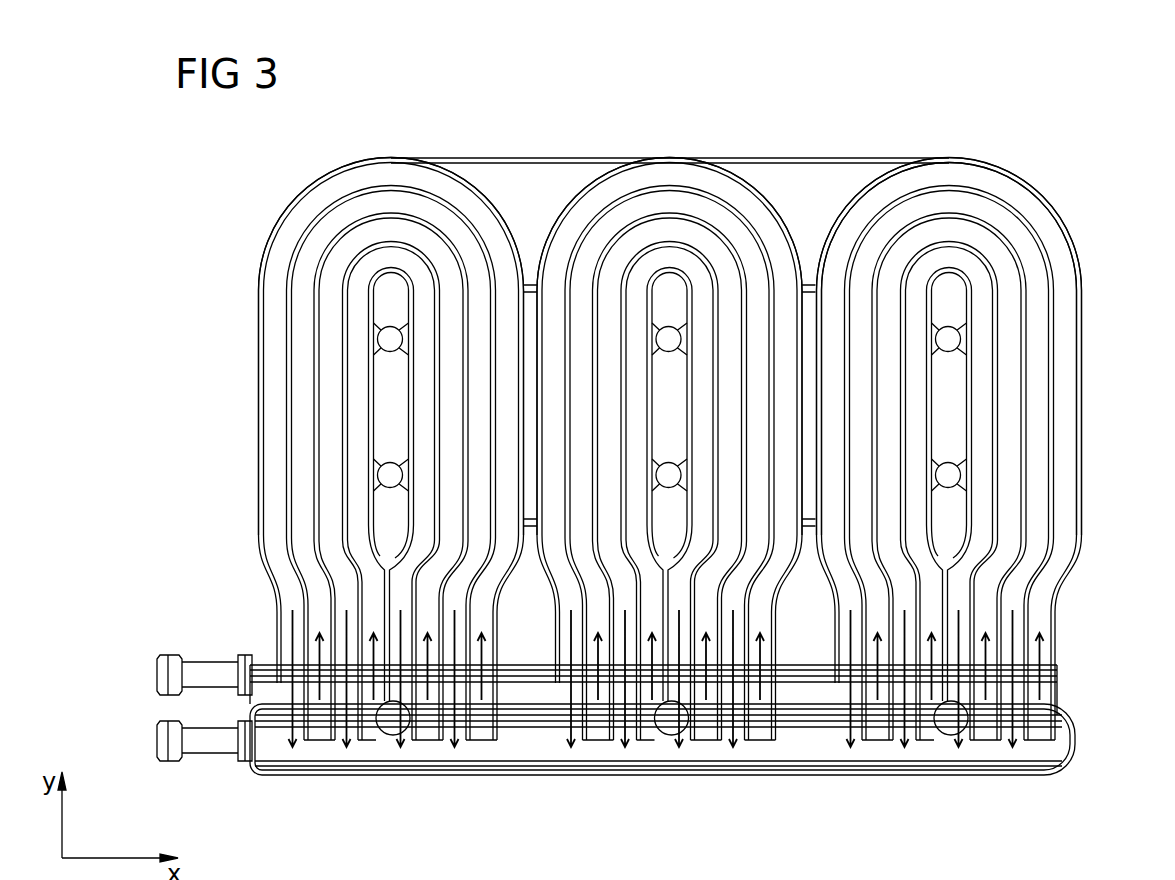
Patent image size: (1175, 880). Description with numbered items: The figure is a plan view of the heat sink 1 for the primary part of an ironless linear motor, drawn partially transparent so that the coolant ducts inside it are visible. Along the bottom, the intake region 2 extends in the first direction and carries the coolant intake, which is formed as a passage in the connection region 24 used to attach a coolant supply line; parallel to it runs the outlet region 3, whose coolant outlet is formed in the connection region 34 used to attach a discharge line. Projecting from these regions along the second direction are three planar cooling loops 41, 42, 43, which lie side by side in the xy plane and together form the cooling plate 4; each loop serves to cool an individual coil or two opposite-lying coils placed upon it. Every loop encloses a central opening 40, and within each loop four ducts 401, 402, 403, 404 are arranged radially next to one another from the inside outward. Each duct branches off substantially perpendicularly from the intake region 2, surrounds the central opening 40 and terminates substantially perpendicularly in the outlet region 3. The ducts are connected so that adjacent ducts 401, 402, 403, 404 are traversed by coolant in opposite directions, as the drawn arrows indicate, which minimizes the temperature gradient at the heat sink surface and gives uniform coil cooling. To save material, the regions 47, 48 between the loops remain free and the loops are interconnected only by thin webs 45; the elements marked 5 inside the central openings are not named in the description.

The heat sink 1 is at (1094, 186).
The intake region 2 is at (1058, 702).
The outlet region 3 is at (1063, 758).
The cooling plate 4 is at (1087, 467).
The sensor 5 is at (391, 327).
The connection region 24 is at (210, 675).
The connection region 34 is at (203, 742).
The central opening 40 is at (385, 395).
The cooling loop 41 is at (267, 258).
The cooling loop 42 is at (770, 212).
The cooling loop 43 is at (1072, 242).
The web 45 is at (567, 160).
The region between cooling loops 47 is at (512, 183).
The region between cooling loops 48 is at (521, 650).
The duct 401 is at (353, 425).
The duct 402 is at (330, 455).
The duct 403 is at (300, 487).
The duct 404 is at (273, 528).